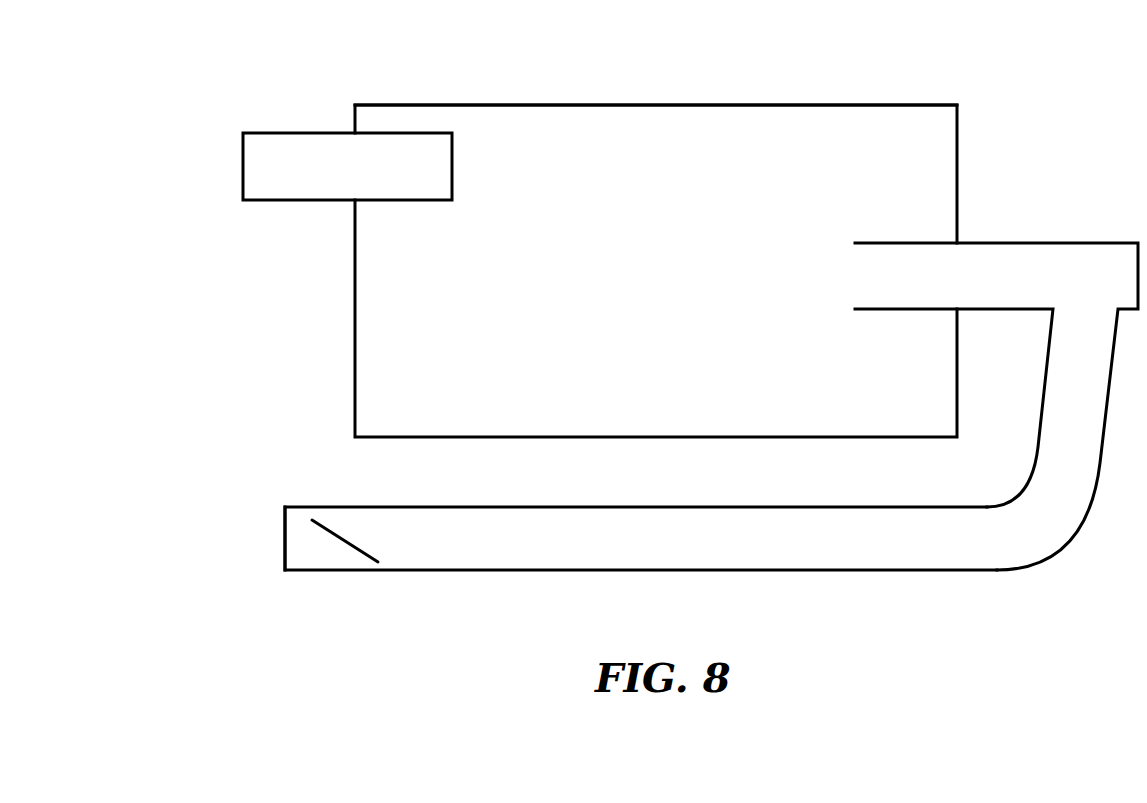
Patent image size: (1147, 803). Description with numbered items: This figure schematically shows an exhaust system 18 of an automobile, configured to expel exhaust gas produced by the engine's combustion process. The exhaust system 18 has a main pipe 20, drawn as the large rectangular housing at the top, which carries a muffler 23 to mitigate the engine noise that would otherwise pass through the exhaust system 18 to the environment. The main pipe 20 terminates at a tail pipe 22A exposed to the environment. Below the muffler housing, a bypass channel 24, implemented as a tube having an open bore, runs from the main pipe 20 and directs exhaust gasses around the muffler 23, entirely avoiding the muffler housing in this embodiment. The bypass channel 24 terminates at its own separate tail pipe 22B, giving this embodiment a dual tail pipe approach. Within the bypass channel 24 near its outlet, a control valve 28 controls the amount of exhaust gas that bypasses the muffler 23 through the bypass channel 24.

The exhaust system 18 is at (840, 88).
The main pipe 20 is at (1015, 253).
The tail pipe 22A is at (268, 172).
The tail pipe 22B is at (285, 530).
The muffler 23 is at (551, 106).
The bypass channel 24 is at (883, 572).
The control valve 28 is at (318, 548).